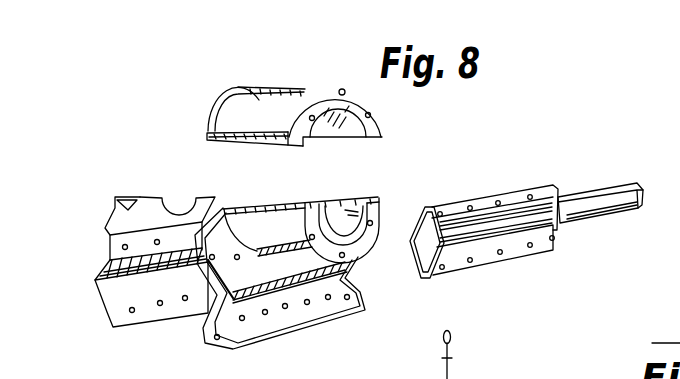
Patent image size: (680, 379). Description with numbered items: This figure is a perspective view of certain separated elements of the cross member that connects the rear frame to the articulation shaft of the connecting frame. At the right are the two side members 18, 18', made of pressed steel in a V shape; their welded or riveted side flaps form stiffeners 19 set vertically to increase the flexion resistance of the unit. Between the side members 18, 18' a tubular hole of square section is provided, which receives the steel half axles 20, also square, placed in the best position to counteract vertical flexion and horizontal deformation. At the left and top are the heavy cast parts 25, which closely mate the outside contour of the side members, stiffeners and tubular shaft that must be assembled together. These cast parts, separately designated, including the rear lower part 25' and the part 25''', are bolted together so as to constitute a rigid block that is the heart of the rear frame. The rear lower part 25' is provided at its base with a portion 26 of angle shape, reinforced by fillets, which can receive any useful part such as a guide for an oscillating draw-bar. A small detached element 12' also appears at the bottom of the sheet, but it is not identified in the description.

The heavy cast parts 25 is at (198, 174).
The rear lower cast part 25' is at (234, 185).
The cast part 25''' is at (254, 113).
The angle-shaped portion 26 is at (302, 326).
The side member 18 is at (495, 213).
The side member 18' is at (420, 215).
The stiffeners 19 is at (427, 212).
The half axles 20 is at (590, 198).
The pin 12' is at (469, 355).